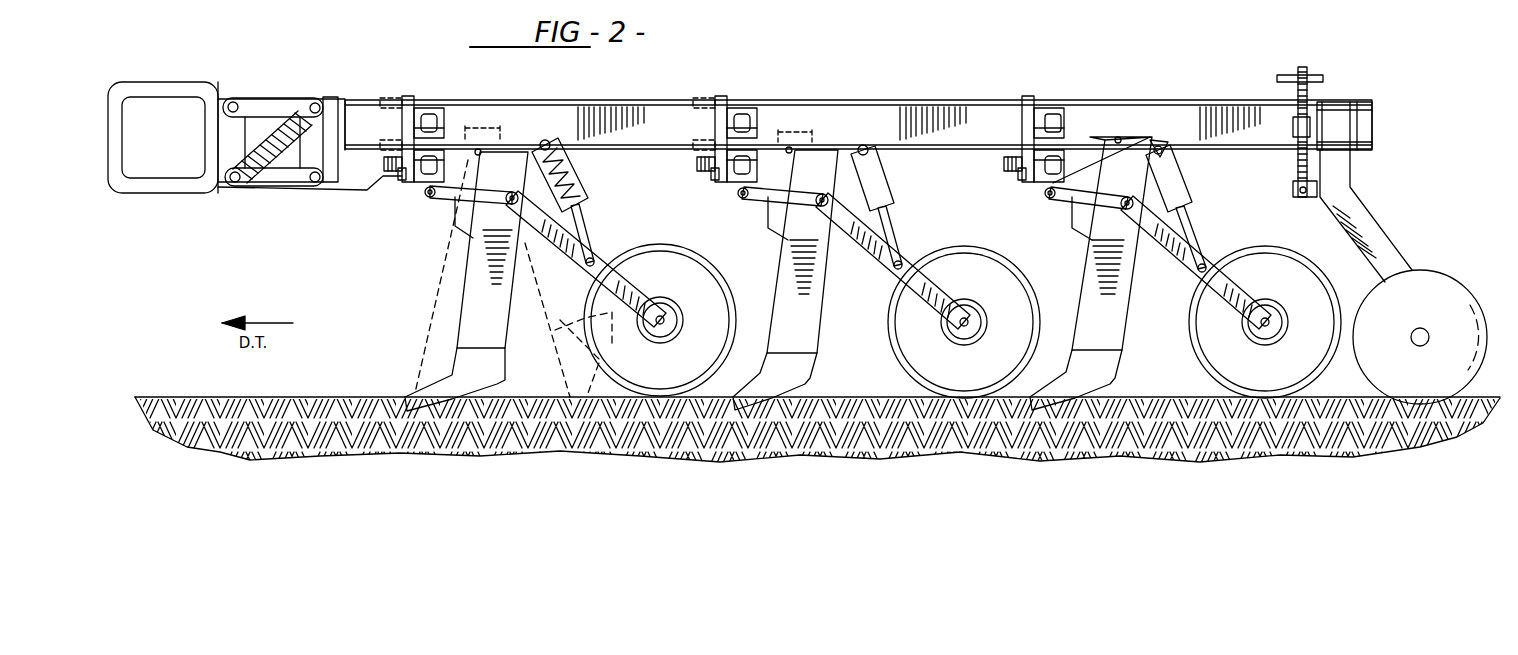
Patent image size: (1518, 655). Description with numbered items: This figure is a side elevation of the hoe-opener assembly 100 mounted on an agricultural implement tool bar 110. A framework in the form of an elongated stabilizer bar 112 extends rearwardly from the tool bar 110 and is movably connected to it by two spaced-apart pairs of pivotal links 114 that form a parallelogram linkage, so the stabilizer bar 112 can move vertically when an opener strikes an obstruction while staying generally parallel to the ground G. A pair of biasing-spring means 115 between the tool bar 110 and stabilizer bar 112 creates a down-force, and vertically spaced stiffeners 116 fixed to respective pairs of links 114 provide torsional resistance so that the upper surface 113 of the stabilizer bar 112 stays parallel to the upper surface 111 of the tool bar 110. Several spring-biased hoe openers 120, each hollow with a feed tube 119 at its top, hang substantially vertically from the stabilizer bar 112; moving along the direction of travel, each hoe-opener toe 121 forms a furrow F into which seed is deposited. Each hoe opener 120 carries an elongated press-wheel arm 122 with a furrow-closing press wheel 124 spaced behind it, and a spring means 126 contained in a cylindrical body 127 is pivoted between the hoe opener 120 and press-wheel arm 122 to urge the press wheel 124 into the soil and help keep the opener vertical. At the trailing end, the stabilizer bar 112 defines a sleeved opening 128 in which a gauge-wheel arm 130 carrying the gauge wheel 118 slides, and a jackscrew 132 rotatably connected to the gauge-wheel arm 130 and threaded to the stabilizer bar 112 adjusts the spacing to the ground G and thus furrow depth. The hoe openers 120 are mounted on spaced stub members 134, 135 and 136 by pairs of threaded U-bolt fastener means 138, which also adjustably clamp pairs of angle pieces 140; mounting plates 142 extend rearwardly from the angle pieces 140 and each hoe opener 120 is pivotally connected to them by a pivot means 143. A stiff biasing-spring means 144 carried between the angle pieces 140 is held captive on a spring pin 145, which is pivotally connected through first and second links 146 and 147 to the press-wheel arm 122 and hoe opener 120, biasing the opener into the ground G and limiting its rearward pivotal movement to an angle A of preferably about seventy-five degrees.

The hoe-opener assembly 100 is at (222, 233).
The tool bar 110 is at (108, 113).
The upper surface of tool bar 111 is at (178, 83).
The stabilizer bar 112 is at (633, 120).
The upper surface of stabilizer bar 113 is at (612, 99).
The links 114 is at (297, 108).
The biasing-spring means 115 is at (322, 116).
The stiffeners 116 is at (265, 108).
The gauge wheel 118 is at (1462, 280).
The feed tube 119 is at (525, 100).
The hoe opener 120 is at (475, 327).
The hoe-opener toe 121 is at (407, 397).
The press-wheel arm 122 is at (607, 267).
The press wheel 124 is at (690, 258).
The spring means 126 is at (578, 190).
The cylindrical body 127 is at (575, 162).
The sleeved opening 128 is at (1348, 122).
The gauge-wheel arm 130 is at (1378, 260).
The jackscrew 132 is at (1298, 167).
The stub member 134 is at (433, 100).
The stub member 135 is at (750, 102).
The stub member 136 is at (1065, 103).
The U-bolt fastener means 138 is at (452, 112).
The angle pieces 140 is at (405, 178).
The mounting plates 142 is at (477, 150).
The pivot means 143 is at (477, 152).
The biasing-spring means 144 is at (393, 190).
The spring pin 145 is at (388, 163).
The first link 146 is at (423, 172).
The second link 147 is at (450, 205).
The angle A is at (430, 328).
The furrow F is at (548, 400).
The ground G is at (160, 397).